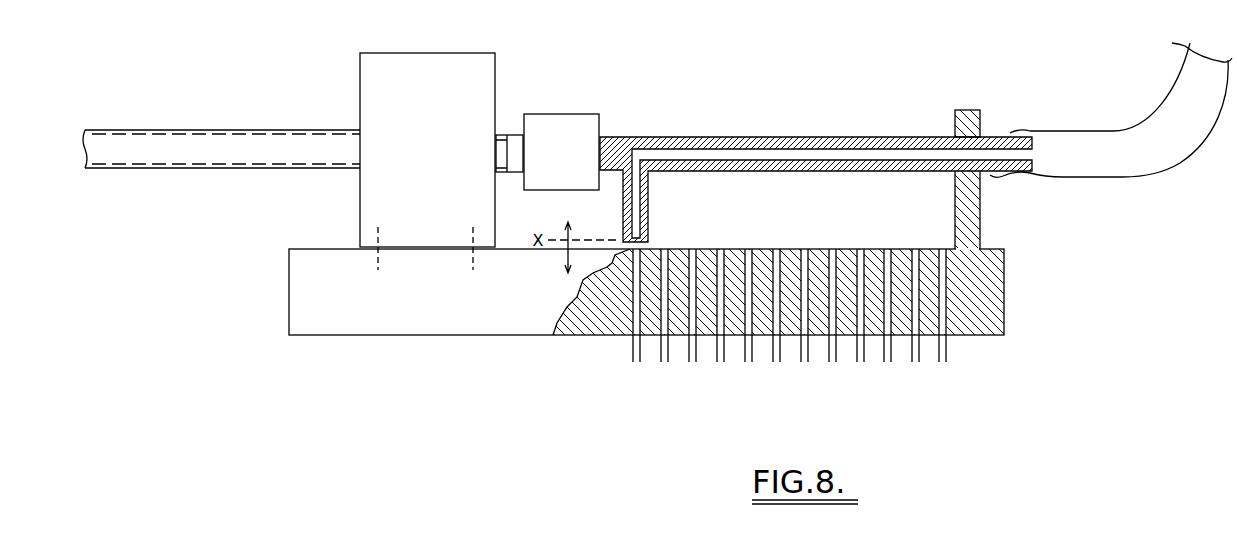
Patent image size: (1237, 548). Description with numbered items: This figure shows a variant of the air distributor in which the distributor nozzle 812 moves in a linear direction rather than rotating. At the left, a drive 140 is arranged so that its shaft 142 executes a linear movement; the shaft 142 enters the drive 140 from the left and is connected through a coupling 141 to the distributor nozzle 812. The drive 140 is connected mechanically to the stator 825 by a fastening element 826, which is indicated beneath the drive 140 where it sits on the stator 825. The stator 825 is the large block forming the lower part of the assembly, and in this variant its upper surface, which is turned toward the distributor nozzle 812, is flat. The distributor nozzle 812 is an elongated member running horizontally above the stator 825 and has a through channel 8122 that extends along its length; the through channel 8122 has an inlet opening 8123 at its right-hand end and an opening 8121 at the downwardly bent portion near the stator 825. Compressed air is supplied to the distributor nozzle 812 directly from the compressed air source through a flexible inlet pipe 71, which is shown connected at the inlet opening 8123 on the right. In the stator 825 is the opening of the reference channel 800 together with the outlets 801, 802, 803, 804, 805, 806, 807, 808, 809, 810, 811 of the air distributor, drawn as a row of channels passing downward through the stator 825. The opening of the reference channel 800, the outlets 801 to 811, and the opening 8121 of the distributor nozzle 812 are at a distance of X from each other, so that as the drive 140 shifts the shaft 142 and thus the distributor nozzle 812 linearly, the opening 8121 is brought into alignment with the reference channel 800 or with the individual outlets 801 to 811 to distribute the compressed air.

The shaft 142 is at (260, 148).
The drive 140 is at (427, 150).
The coupling 141 is at (561, 152).
The distributor nozzle 812 is at (613, 137).
The through channel 8122 is at (742, 152).
The opening 8121 is at (648, 240).
The inlet opening 8123 is at (1032, 155).
The flexible inlet pipe 71 is at (1111, 110).
The stator 825 is at (378, 320).
The fastening element 826 is at (463, 258).
The reference channel 800 is at (636, 314).
The outlet 801 is at (664, 325).
The outlet 802 is at (697, 314).
The outlet 803 is at (728, 325).
The outlet 804 is at (753, 314).
The outlet 805 is at (783, 325).
The outlet 806 is at (810, 314).
The outlet 807 is at (840, 325).
The outlet 808 is at (863, 314).
The outlet 809 is at (892, 325).
The outlet 810 is at (917, 314).
The outlet 811 is at (953, 325).